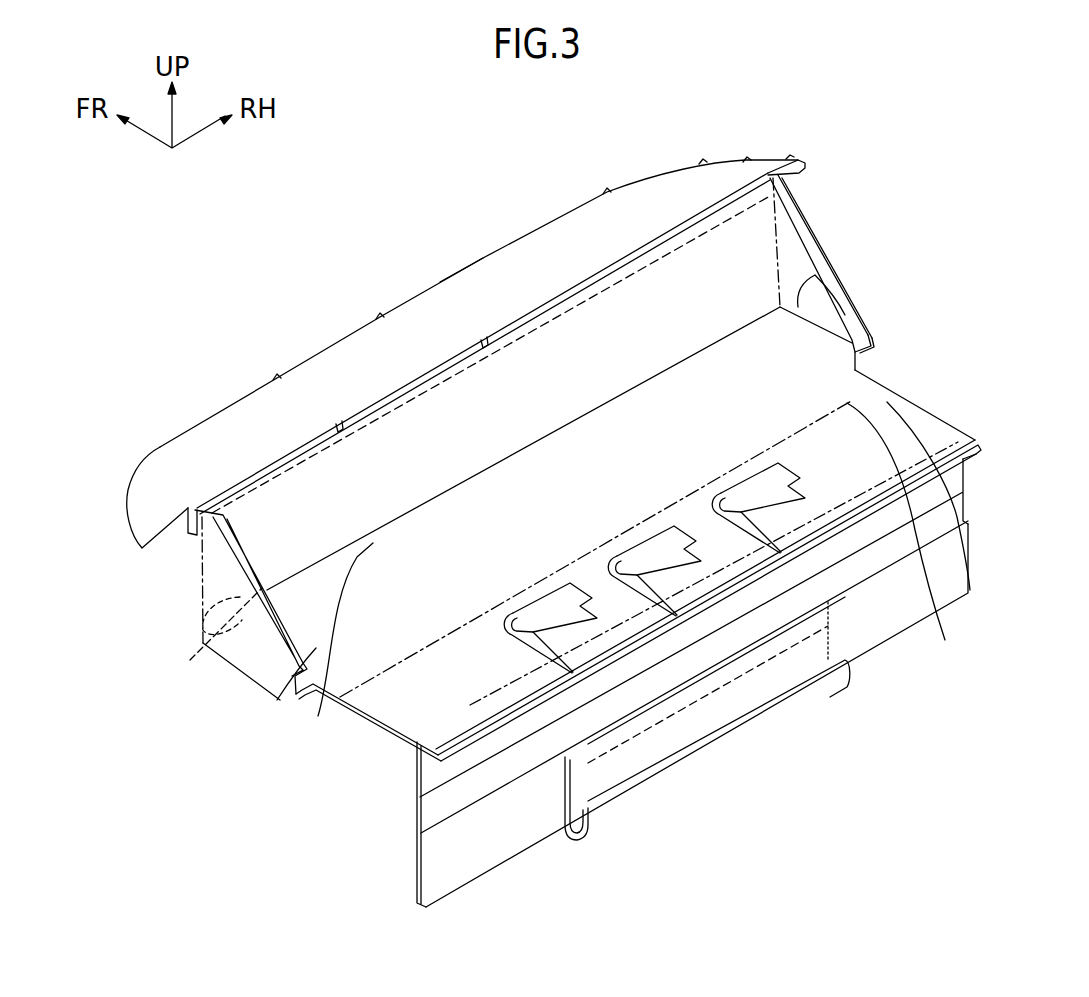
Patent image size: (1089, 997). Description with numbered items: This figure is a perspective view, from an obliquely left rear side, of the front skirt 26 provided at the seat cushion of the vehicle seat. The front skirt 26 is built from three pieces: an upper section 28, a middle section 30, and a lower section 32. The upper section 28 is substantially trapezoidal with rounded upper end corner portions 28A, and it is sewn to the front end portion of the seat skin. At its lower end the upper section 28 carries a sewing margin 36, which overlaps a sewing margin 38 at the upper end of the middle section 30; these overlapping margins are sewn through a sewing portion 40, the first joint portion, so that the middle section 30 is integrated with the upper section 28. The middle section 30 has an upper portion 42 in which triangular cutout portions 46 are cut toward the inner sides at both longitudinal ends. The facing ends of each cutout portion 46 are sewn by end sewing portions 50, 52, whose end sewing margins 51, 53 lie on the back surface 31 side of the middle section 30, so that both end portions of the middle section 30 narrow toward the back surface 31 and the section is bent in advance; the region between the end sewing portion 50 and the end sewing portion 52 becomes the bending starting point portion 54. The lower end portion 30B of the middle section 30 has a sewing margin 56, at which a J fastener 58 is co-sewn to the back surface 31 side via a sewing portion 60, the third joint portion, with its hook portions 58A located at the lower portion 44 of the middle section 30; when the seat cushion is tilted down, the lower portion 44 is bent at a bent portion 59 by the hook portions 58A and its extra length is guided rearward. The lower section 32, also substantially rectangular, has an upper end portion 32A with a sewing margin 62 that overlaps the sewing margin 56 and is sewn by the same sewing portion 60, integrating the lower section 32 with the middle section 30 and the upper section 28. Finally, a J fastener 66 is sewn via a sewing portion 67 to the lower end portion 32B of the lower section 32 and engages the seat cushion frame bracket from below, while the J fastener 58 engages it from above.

The front skirt 26 is at (913, 291).
The upper section 28 is at (788, 148).
The upper end corner portions 28A is at (135, 530).
The middle section 30 is at (867, 261).
The lower end portion 30B is at (913, 417).
The back surface 31 is at (310, 648).
The lower section 32 is at (980, 500).
The upper end portion 32A is at (443, 773).
The lower end portion 32B is at (463, 867).
The sewing margin 36 is at (353, 413).
The sewing margin 38 is at (427, 373).
The sewing portion 40 is at (470, 268).
The upper portion 42 is at (290, 615).
The lower portion 44 is at (410, 700).
The cutout portions 46 is at (235, 612).
The end sewing portion 50 is at (874, 353).
The end sewing margin 51 is at (822, 262).
The end sewing portion 52 is at (238, 600).
The end sewing margin 53 is at (210, 636).
The bending starting point portion 54 is at (318, 716).
The sewing margin 56 is at (957, 442).
The J fastener 58 is at (567, 645).
The hook portions 58A is at (545, 603).
The bent portion 59 is at (967, 553).
The sewing portion 60 is at (944, 640).
The sewing margin 62 is at (970, 453).
The J fastener 66 is at (700, 722).
The sewing portion 67 is at (767, 663).